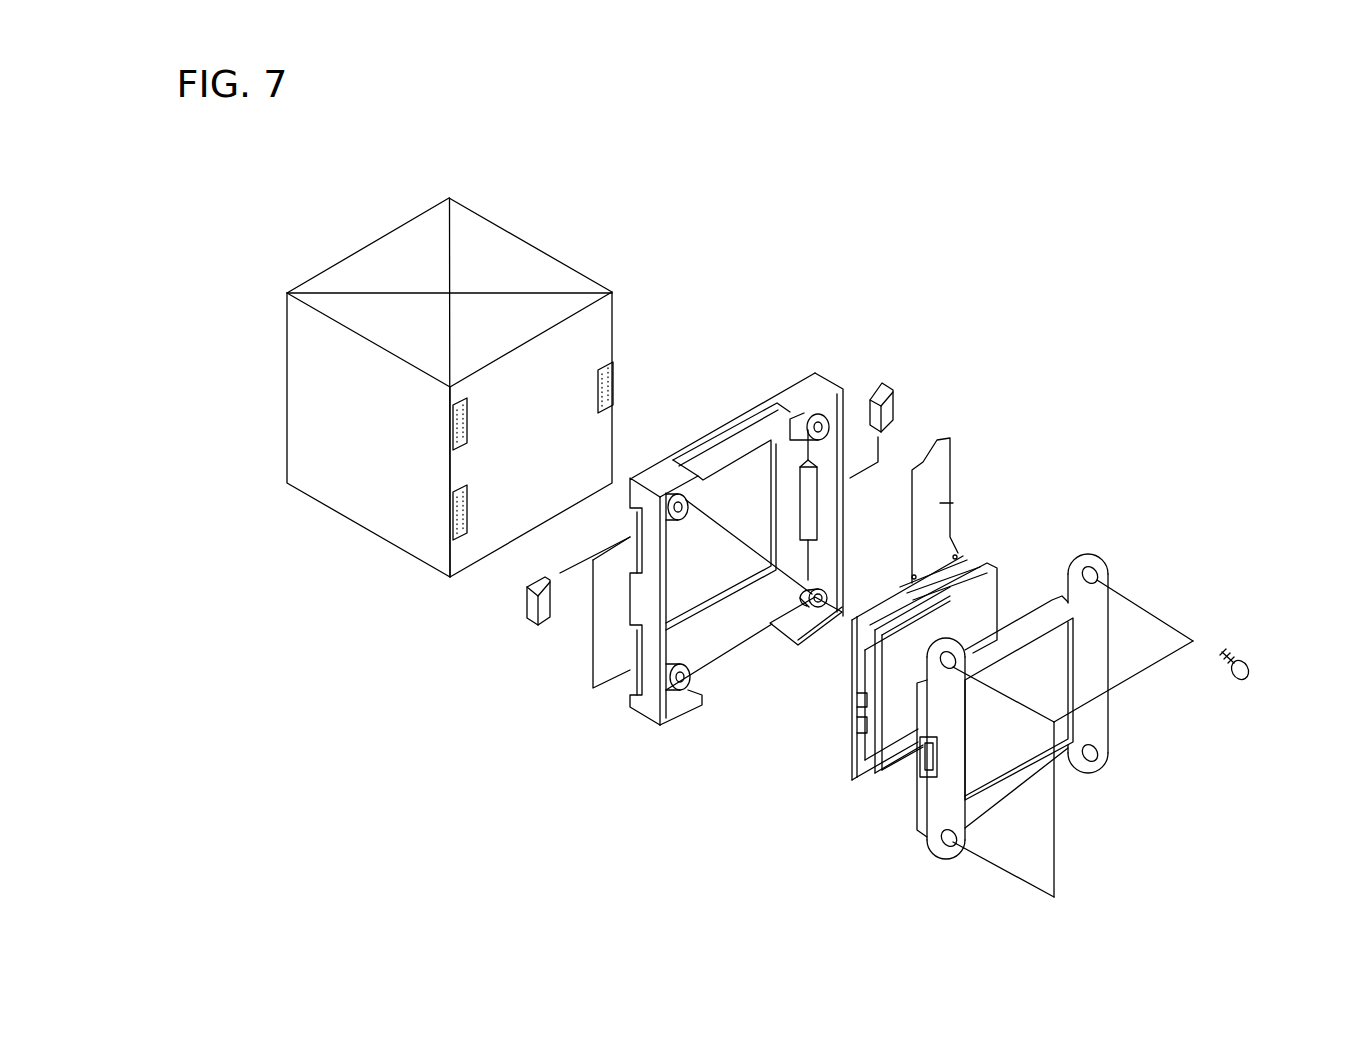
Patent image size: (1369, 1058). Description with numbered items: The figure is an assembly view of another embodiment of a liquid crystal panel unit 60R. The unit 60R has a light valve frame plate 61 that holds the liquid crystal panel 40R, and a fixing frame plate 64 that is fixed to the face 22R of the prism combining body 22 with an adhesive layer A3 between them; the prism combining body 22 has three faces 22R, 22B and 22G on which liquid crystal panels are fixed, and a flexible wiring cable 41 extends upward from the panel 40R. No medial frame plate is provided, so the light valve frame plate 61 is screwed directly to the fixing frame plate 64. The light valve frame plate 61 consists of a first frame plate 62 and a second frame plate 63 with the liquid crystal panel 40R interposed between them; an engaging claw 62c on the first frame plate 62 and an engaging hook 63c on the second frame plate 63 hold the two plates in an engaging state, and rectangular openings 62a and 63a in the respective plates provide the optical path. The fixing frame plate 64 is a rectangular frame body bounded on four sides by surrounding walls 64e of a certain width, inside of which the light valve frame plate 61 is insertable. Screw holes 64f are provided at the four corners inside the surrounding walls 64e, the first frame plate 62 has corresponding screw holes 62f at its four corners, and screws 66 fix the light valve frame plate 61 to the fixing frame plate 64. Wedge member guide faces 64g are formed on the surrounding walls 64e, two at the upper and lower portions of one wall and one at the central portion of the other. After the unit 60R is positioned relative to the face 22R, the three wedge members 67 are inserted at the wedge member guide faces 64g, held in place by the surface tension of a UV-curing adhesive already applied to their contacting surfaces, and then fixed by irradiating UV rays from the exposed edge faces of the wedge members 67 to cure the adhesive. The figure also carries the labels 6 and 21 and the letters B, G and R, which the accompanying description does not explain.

The optical unit 6 is at (573, 237).
The dichroic prism element 21 is at (426, 281).
The prism combining body 22 is at (427, 408).
The face of the prism combining body 22B is at (353, 270).
The face of the prism combining body 22G is at (313, 427).
The face of the prism combining body 22R is at (615, 398).
The adhesive layer A3 is at (608, 378).
The blue light B is at (268, 291).
The green light G is at (410, 498).
The red light R is at (560, 441).
The liquid crystal panel 40R is at (983, 620).
The flexible wiring cable 41 is at (950, 500).
The liquid crystal panel unit 60R is at (1023, 355).
The light valve frame plate 61 is at (1096, 454).
The first frame plate 62 is at (1021, 709).
The rectangular opening 62a is at (983, 775).
The engaging claw 62c is at (921, 753).
The screw holes 62f is at (1100, 560).
The second frame plate 63 is at (907, 615).
The rectangular opening 63a is at (855, 680).
The engaging hook 63c is at (847, 693).
The fixing frame plate 64 is at (723, 536).
The surrounding walls 64e is at (645, 704).
The screw holes 64f is at (824, 395).
The wedge member guide face 64g is at (636, 520).
The screws 66 is at (1240, 652).
The wedge members 67 is at (530, 603).